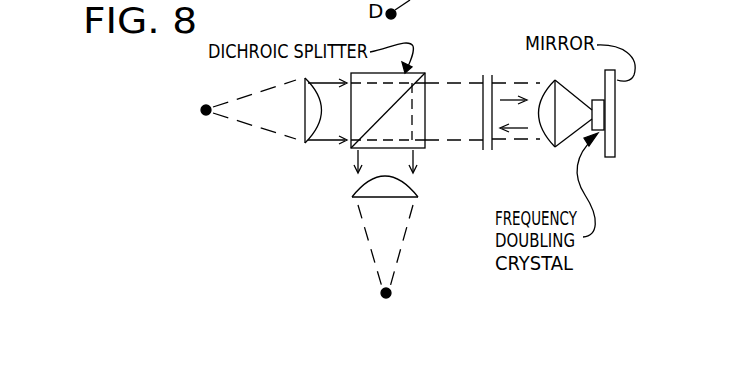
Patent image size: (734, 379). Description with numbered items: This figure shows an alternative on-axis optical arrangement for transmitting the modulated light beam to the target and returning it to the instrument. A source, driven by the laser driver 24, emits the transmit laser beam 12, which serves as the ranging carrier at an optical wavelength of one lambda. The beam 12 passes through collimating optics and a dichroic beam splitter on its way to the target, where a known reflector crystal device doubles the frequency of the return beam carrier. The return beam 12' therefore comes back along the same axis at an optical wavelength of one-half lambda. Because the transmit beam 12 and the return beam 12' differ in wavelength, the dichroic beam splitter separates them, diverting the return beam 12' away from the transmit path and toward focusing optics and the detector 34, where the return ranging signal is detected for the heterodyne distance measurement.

The first laser beam 12 is at (482, 83).
The return beam 12' is at (484, 164).
The laser driver 24 is at (212, 120).
The detector 34 is at (395, 290).